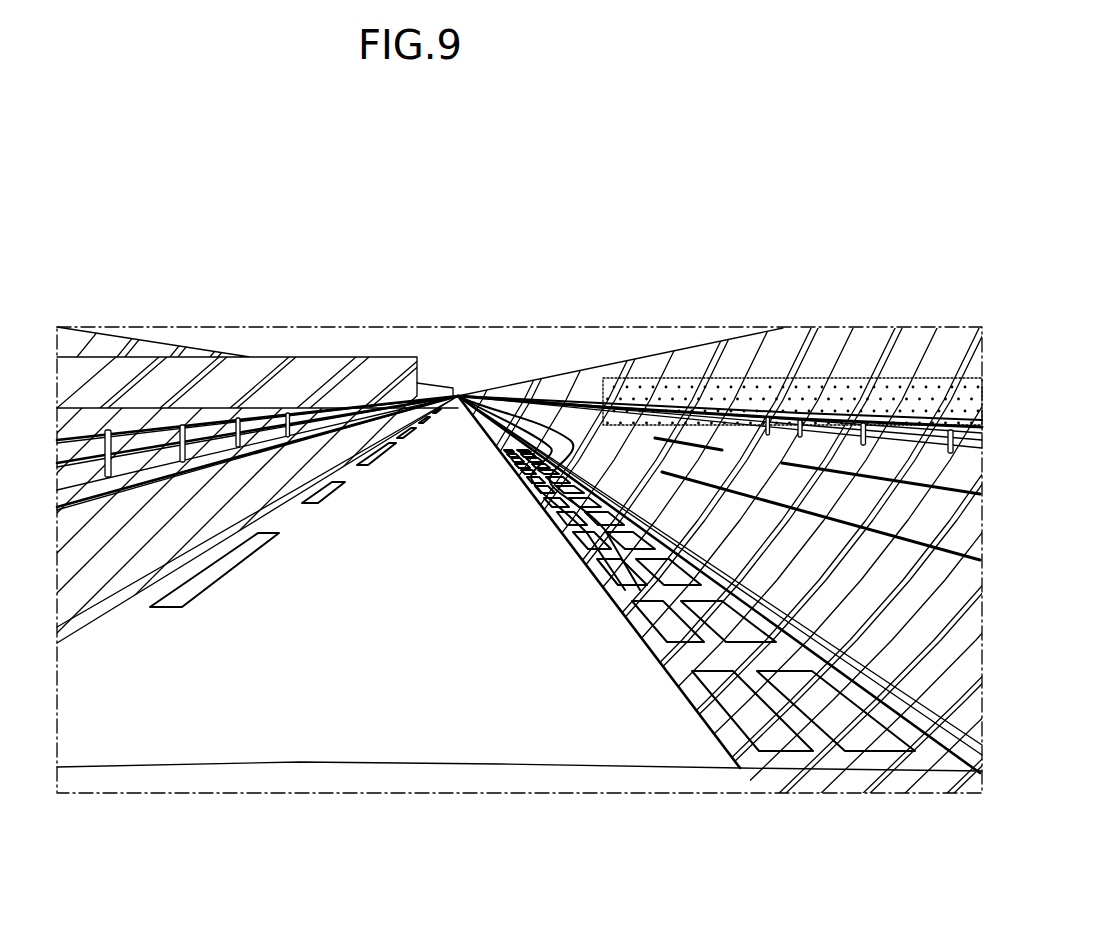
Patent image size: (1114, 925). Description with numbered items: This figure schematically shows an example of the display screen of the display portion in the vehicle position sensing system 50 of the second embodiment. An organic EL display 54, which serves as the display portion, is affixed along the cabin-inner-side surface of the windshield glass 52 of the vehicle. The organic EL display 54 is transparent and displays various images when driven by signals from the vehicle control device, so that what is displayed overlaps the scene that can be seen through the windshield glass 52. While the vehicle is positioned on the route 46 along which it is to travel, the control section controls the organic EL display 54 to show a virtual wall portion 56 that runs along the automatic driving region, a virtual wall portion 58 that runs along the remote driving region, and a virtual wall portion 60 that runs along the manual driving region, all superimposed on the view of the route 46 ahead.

The vehicle position sensing system 50 is at (681, 246).
The route 46 is at (510, 722).
The windshield glass 52 is at (454, 366).
The organic EL display 54 is at (698, 326).
The virtual wall portion 56 is at (227, 493).
The virtual wall portion 58 is at (266, 373).
The virtual wall portion 60 is at (960, 400).